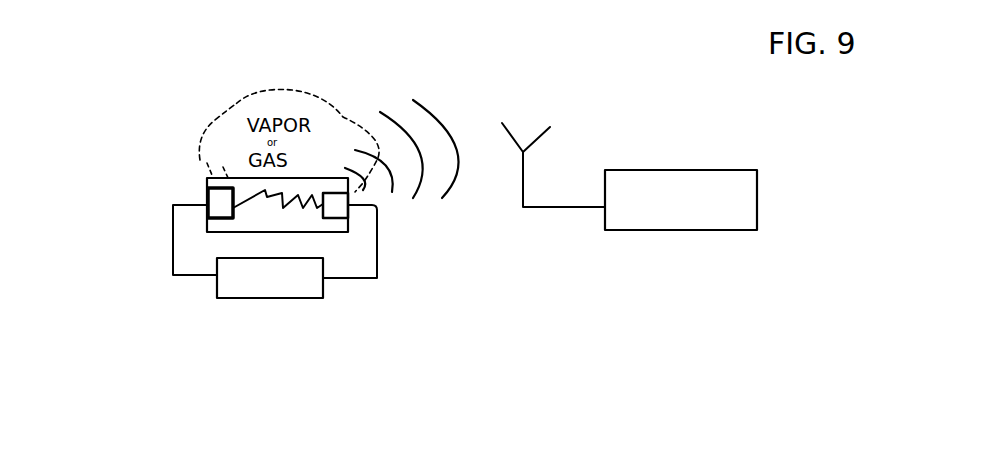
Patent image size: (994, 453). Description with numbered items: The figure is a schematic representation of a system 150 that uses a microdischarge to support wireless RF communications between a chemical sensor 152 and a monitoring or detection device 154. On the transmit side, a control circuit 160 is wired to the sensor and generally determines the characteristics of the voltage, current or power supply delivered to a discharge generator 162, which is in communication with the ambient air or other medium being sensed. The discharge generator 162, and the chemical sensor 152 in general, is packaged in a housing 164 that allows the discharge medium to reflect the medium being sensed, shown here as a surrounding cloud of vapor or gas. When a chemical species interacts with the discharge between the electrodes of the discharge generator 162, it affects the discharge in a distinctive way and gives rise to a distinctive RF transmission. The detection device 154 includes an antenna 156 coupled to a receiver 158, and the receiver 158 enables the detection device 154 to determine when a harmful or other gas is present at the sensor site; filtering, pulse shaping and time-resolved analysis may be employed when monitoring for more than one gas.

The system 150 is at (426, 361).
The chemical sensor 152 is at (137, 246).
The detection device 154 is at (614, 255).
The antenna 156 is at (543, 142).
The receiver 158 is at (667, 170).
The control circuit 160 is at (276, 298).
The discharge generator 162 is at (207, 187).
The housing 164 is at (347, 220).